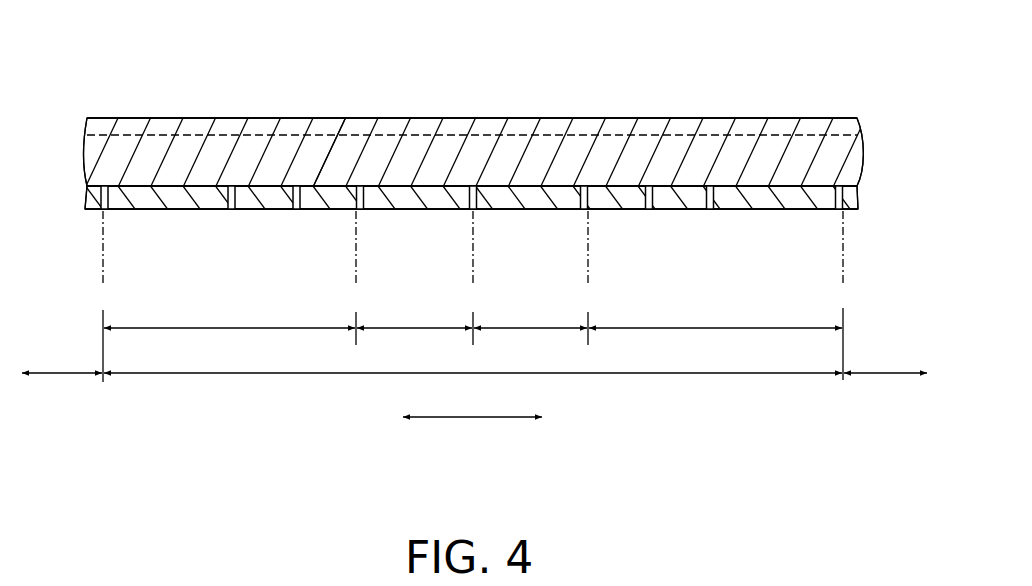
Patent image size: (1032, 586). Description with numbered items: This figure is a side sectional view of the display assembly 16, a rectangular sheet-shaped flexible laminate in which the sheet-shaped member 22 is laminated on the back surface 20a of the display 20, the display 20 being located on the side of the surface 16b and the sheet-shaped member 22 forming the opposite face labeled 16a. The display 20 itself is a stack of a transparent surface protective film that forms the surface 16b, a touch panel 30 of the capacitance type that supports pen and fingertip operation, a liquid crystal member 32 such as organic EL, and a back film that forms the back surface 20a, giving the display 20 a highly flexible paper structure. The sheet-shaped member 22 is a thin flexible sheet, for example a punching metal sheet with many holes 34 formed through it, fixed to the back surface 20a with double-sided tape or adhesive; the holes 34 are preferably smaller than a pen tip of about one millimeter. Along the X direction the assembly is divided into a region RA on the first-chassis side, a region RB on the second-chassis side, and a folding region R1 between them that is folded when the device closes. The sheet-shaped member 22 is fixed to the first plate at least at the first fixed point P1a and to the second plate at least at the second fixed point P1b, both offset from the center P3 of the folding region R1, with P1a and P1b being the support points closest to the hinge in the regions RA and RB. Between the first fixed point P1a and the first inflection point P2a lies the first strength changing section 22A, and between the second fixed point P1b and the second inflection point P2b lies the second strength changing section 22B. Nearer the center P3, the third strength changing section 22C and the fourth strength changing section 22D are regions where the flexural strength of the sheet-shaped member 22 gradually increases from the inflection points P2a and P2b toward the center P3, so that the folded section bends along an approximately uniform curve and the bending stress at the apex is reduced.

The display assembly 16 is at (151, 57).
The lower surface of element 16a is at (177, 210).
The surface 16b is at (200, 118).
The display 20 is at (855, 162).
The back surface 20a is at (143, 210).
The sheet-shaped member 22 is at (850, 197).
The first strength changing section 22A is at (229, 347).
The second strength changing section 22B is at (715, 347).
The third strength changing section 22C is at (414, 347).
The fourth strength changing section 22D is at (530, 347).
The touch panel 30 is at (272, 135).
The liquid crystal member 32 is at (331, 147).
The holes 34 is at (296, 210).
The first fixed point P1a is at (100, 296).
The second fixed point P1b is at (842, 295).
The first inflection point P2a is at (355, 278).
The second inflection point P2b is at (588, 278).
The center P3 is at (471, 278).
The folding region R1 is at (473, 390).
The region RA is at (62, 392).
The region RB is at (885, 391).
The X direction X is at (472, 435).